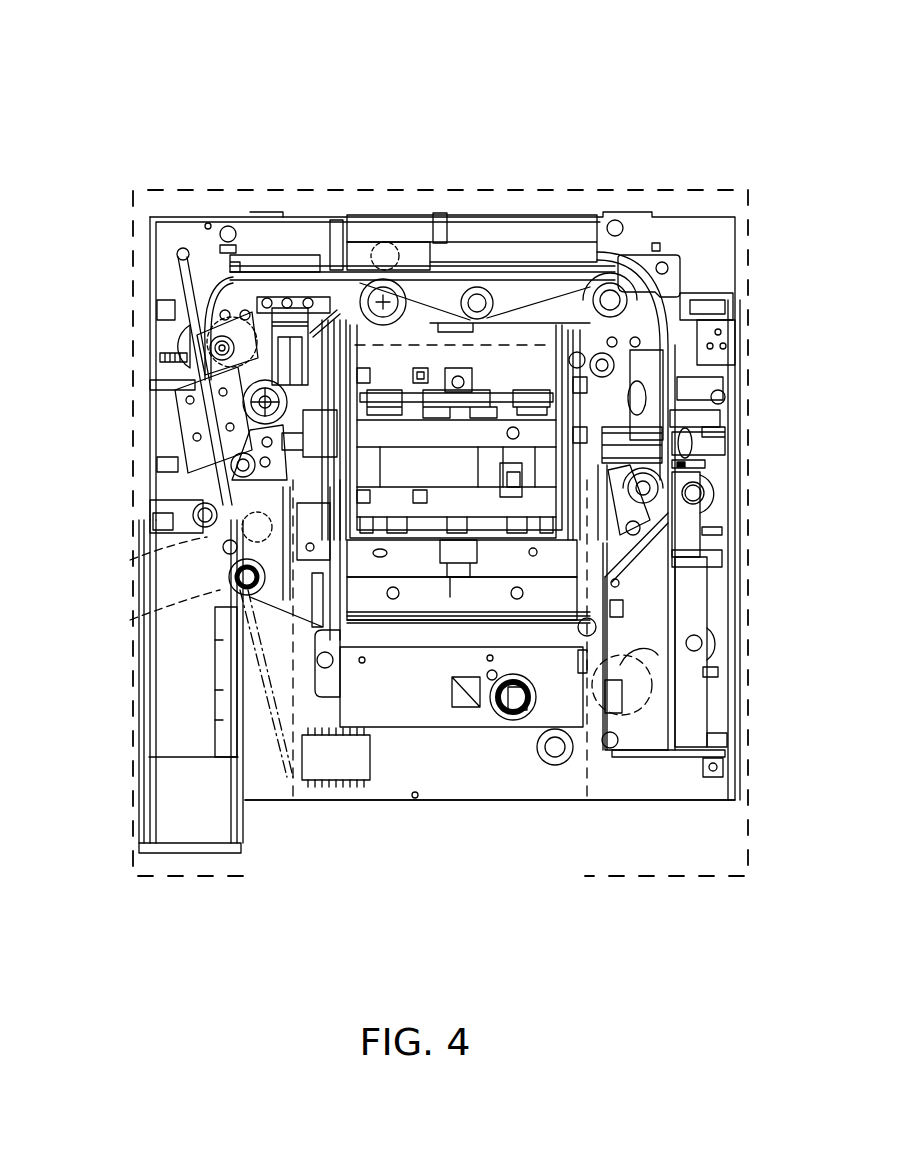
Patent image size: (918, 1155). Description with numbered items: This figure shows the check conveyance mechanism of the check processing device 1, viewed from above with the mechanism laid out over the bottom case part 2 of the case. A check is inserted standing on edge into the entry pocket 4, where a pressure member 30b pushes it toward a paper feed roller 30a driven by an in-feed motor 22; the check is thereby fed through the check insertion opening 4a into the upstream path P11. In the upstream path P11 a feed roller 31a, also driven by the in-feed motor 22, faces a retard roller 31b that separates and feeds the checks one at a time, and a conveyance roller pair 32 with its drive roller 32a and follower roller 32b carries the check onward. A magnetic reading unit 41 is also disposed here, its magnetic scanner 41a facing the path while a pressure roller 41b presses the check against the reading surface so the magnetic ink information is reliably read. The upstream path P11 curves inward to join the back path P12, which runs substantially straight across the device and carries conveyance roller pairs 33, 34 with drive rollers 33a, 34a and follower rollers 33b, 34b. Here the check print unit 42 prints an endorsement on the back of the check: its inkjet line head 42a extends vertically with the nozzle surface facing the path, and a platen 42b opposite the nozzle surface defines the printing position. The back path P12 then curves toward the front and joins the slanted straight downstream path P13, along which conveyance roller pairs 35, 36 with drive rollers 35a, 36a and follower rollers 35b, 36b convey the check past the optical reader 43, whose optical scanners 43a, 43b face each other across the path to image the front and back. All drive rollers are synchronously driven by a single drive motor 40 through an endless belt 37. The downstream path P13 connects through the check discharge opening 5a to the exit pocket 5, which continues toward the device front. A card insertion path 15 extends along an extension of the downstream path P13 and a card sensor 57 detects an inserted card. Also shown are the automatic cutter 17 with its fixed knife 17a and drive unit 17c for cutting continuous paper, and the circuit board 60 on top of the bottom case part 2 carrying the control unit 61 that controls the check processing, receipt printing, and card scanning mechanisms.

The check processing device 1 is at (672, 105).
The bottom case part 2 is at (745, 185).
The entry pocket 4 is at (645, 728).
The check insertion opening 4a is at (700, 565).
The exit pocket 5 is at (175, 687).
The check discharge opening 5a is at (232, 540).
The card insertion path 15 is at (268, 785).
The automatic cutter 17 is at (435, 892).
The fixed knife 17a is at (450, 600).
The drive unit 17c is at (466, 712).
The in-feed motor 22 is at (630, 705).
The paper feed roller 30a is at (722, 643).
The pressure member 30b is at (660, 650).
The feed roller 31a is at (680, 530).
The retard roller 31b is at (690, 500).
The conveyance roller pair 32 is at (815, 372).
The drive roller 32a is at (700, 422).
The follower roller 32b is at (735, 382).
The conveyance roller pair 33 is at (570, 126).
The drive roller 33a is at (572, 295).
The follower roller 33b is at (612, 282).
The conveyance roller pair 34 is at (378, 142).
The drive roller 34a is at (382, 243).
The follower roller 34b is at (422, 290).
The conveyance roller pair 35 is at (76, 265).
The drive roller 35a is at (213, 337).
The follower roller 35b is at (185, 356).
The conveyance roller pair 36 is at (76, 470).
The drive roller 36a is at (205, 497).
The follower roller 36b is at (200, 520).
The endless belt 37 is at (522, 290).
The drive motor 40 is at (517, 742).
The magnetic reading unit 41 is at (815, 298).
The magnetic scanner 41a is at (740, 352).
The pressure roller 41b is at (740, 324).
The check print unit 42 is at (272, 146).
The inkjet line head 42a is at (298, 290).
The platen 42b is at (297, 330).
The optical reader 43 is at (76, 372).
The optical scanner 43a is at (200, 365).
The optical scanner 43b is at (195, 437).
The card sensor 57 is at (230, 587).
The circuit board 60 is at (427, 778).
The control unit 61 is at (333, 762).
The upstream path P11 is at (720, 462).
The back path P12 is at (475, 278).
The downstream path P13 is at (196, 381).